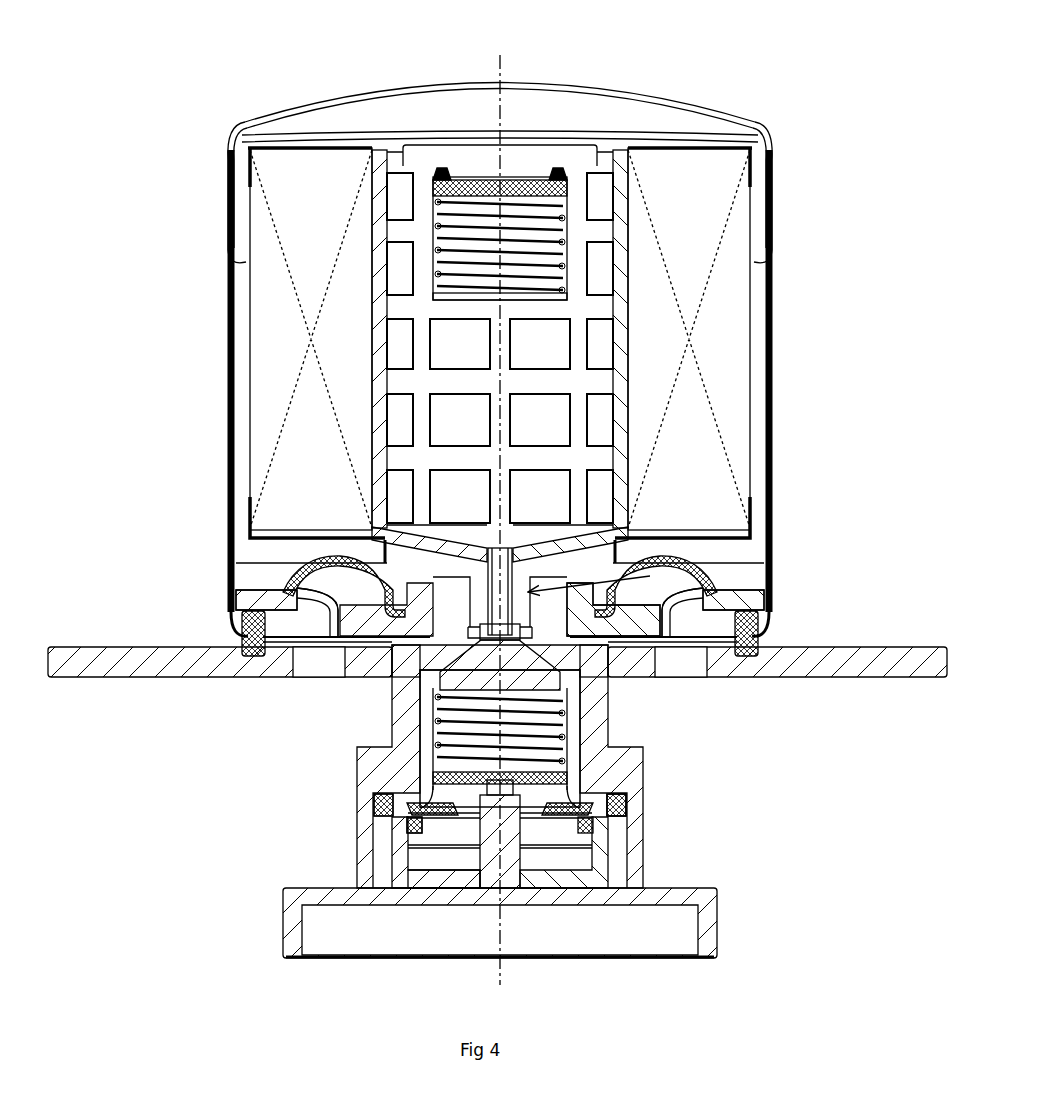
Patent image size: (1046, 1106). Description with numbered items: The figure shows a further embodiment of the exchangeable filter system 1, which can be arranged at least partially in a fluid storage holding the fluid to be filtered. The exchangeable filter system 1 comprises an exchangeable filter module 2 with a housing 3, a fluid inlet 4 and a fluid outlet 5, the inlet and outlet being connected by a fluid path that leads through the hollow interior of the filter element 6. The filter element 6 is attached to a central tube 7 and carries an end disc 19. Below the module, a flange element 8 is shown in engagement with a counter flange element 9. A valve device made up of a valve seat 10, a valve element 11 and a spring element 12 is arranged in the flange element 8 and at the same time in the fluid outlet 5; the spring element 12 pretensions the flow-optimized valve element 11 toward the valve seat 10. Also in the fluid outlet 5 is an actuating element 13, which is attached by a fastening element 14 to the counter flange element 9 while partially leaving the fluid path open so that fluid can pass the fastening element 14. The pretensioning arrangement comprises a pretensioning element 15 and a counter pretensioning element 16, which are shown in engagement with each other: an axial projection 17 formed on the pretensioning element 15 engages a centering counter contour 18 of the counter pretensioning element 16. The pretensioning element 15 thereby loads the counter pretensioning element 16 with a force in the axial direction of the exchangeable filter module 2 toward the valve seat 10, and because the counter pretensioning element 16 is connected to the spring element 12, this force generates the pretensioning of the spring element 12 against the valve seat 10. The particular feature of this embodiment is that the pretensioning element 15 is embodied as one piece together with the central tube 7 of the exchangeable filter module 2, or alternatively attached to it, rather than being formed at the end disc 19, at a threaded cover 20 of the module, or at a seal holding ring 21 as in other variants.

The exchangeable filter system 1 is at (163, 114).
The exchangeable filter module 2 is at (290, 102).
The housing 3 is at (232, 200).
The fluid inlet 4 is at (310, 665).
The fluid outlet 5 is at (398, 937).
The filter element 6 is at (280, 312).
The central tube 7 is at (620, 320).
The flange element 8 is at (600, 720).
The counter flange element 9 is at (640, 857).
The valve seat 10 is at (620, 815).
The valve element 11 is at (562, 775).
The spring element 12 is at (560, 738).
The actuating element 13 is at (430, 845).
The fastening element 14 is at (455, 898).
The pretensioning element 15 is at (613, 562).
The counter pretensioning element 16 is at (760, 630).
The axial projection 17 is at (565, 603).
The centering counter contour 18 is at (383, 600).
The end disc 19 is at (484, 566).
The threaded cover 20 is at (345, 660).
The seal holding ring 21 is at (352, 592).